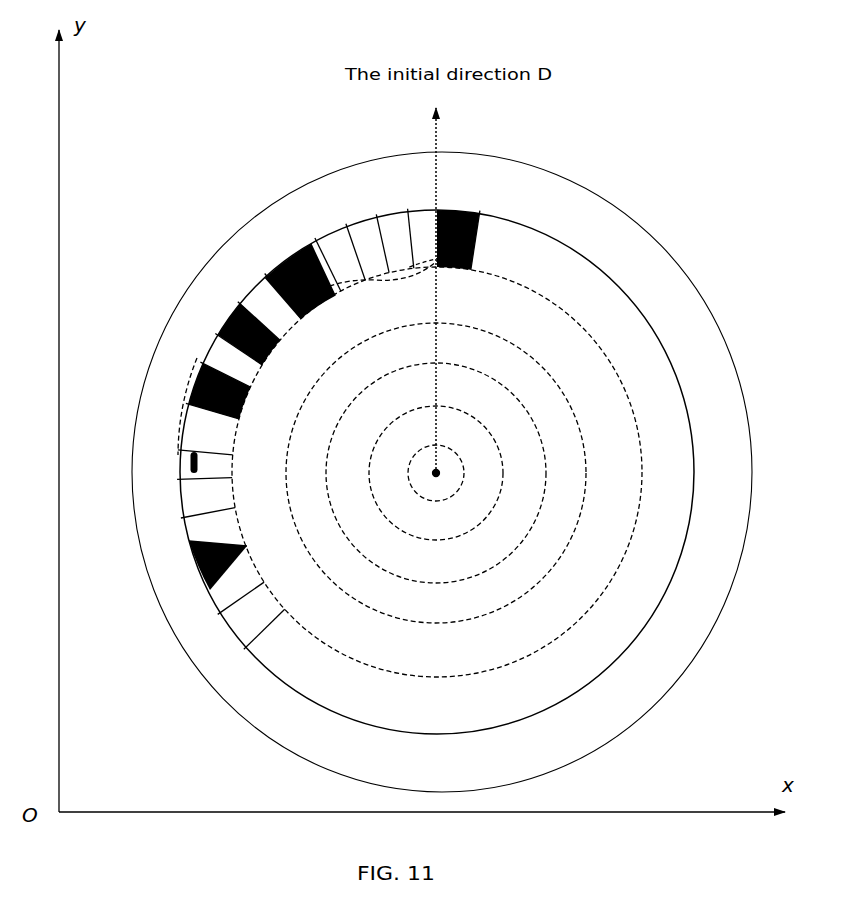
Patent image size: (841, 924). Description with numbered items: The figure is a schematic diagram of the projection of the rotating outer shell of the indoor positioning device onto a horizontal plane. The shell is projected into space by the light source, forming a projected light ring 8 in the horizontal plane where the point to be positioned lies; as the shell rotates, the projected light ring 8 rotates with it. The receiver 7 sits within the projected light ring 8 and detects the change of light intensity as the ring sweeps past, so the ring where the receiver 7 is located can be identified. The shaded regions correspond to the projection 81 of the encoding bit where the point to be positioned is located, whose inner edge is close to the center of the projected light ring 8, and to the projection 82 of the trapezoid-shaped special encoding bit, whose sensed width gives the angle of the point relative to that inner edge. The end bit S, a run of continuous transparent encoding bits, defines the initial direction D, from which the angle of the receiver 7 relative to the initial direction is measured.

The projected light ring 8 is at (190, 353).
The projection of the encoding bit 81 is at (268, 272).
The projection of the special encoding bit 82 is at (200, 580).
The receiver 7 is at (186, 458).
The end bit S is at (350, 222).